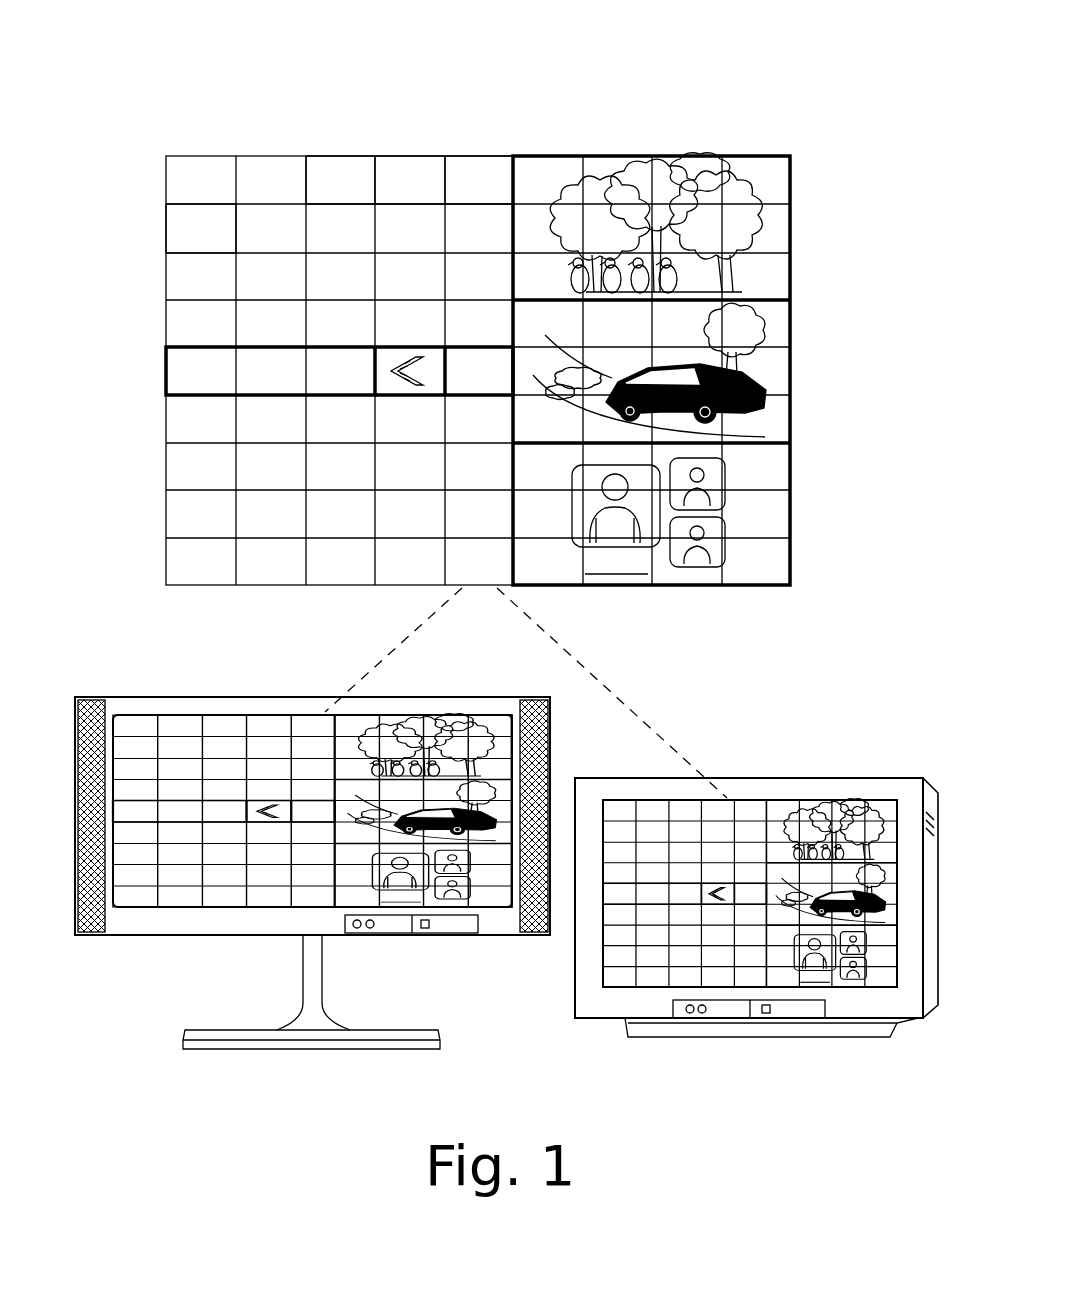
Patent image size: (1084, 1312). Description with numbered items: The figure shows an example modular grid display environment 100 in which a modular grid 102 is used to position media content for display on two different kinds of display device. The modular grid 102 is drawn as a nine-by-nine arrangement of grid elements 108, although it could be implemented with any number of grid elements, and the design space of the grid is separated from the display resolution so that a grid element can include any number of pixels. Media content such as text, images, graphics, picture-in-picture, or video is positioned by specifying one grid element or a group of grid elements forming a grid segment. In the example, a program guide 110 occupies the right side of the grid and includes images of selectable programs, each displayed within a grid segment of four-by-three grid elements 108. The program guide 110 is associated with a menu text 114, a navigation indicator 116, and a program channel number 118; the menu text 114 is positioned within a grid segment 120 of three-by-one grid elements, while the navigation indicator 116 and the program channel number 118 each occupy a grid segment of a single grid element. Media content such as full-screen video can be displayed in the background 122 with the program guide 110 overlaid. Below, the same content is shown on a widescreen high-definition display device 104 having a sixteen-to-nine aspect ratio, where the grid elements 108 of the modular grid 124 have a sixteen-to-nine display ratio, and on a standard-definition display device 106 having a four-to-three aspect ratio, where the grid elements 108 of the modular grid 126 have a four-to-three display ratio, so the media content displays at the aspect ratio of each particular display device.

The modular grid display environment 100 is at (506, 536).
The modular grid 102 is at (500, 326).
The widescreen high-definition display device 104 is at (312, 834).
The standard-definition display device 106 is at (756, 858).
The grid elements 108 is at (483, 177).
The program guide 110 is at (675, 326).
The menu text 114 is at (208, 387).
The navigation indicator 116 is at (398, 383).
The program channel number 118 is at (455, 360).
The grid segment 120 is at (295, 394).
The background 122 is at (206, 215).
The modular grid 124 is at (215, 728).
The modular grid 126 is at (787, 808).